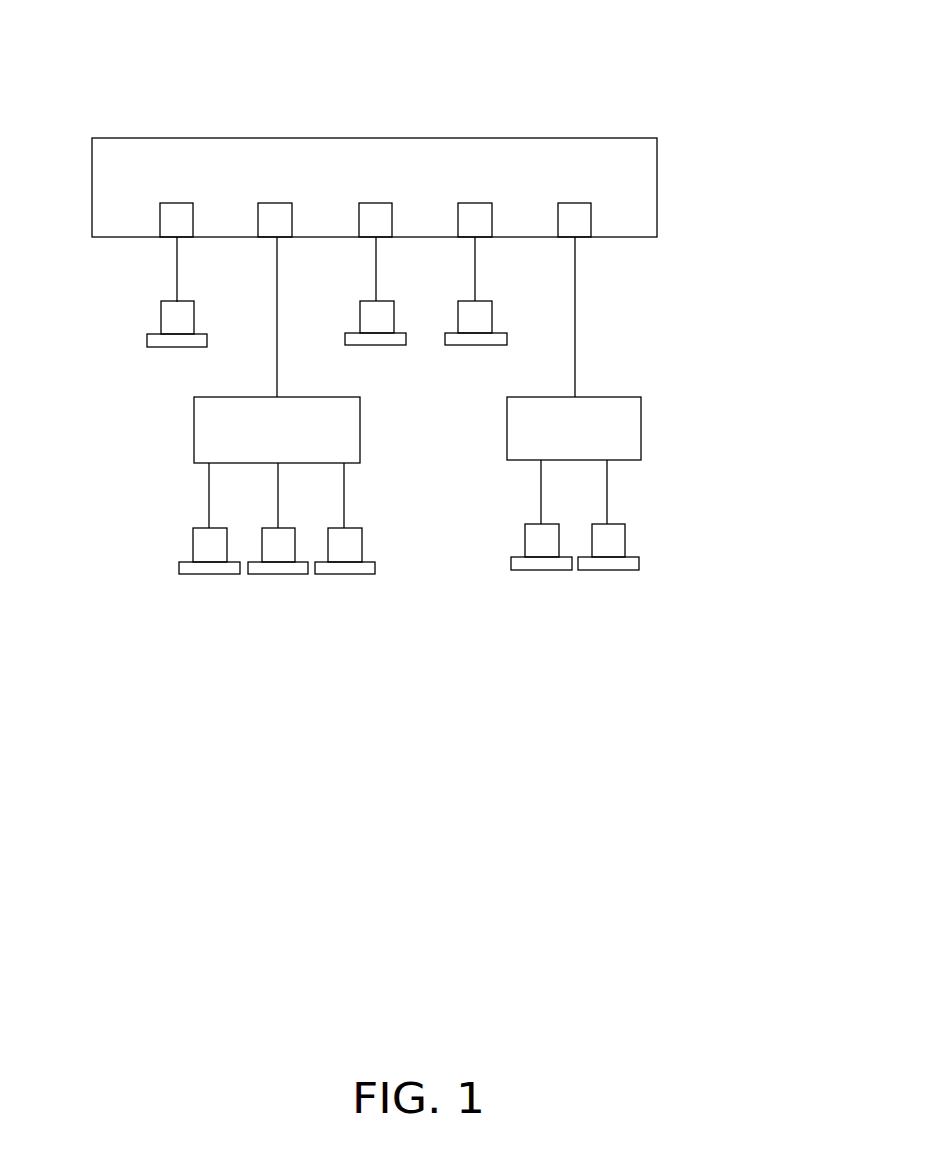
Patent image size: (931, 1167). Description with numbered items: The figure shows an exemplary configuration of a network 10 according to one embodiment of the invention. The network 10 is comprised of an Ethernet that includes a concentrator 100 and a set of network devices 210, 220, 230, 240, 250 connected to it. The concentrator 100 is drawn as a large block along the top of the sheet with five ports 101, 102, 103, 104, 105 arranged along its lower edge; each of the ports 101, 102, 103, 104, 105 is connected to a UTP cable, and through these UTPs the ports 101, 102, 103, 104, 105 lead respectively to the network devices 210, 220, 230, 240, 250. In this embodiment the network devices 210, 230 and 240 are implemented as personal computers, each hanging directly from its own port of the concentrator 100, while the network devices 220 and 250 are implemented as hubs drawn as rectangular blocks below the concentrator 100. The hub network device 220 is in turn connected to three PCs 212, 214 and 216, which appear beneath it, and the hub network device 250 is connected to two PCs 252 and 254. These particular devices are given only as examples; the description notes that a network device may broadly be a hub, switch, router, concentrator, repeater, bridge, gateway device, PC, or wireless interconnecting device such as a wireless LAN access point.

The network 10 is at (397, 33).
The concentrator 100 is at (649, 183).
The port 101 is at (175, 215).
The port 102 is at (270, 207).
The port 103 is at (373, 208).
The port 104 is at (477, 207).
The port 105 is at (578, 209).
The network device 210 is at (178, 319).
The network device 220 is at (222, 433).
The network device 230 is at (367, 315).
The network device 240 is at (470, 315).
The network device 250 is at (633, 430).
The PC 212 is at (209, 547).
The PC 214 is at (273, 557).
The PC 216 is at (343, 550).
The PC 252 is at (545, 548).
The PC 254 is at (617, 549).